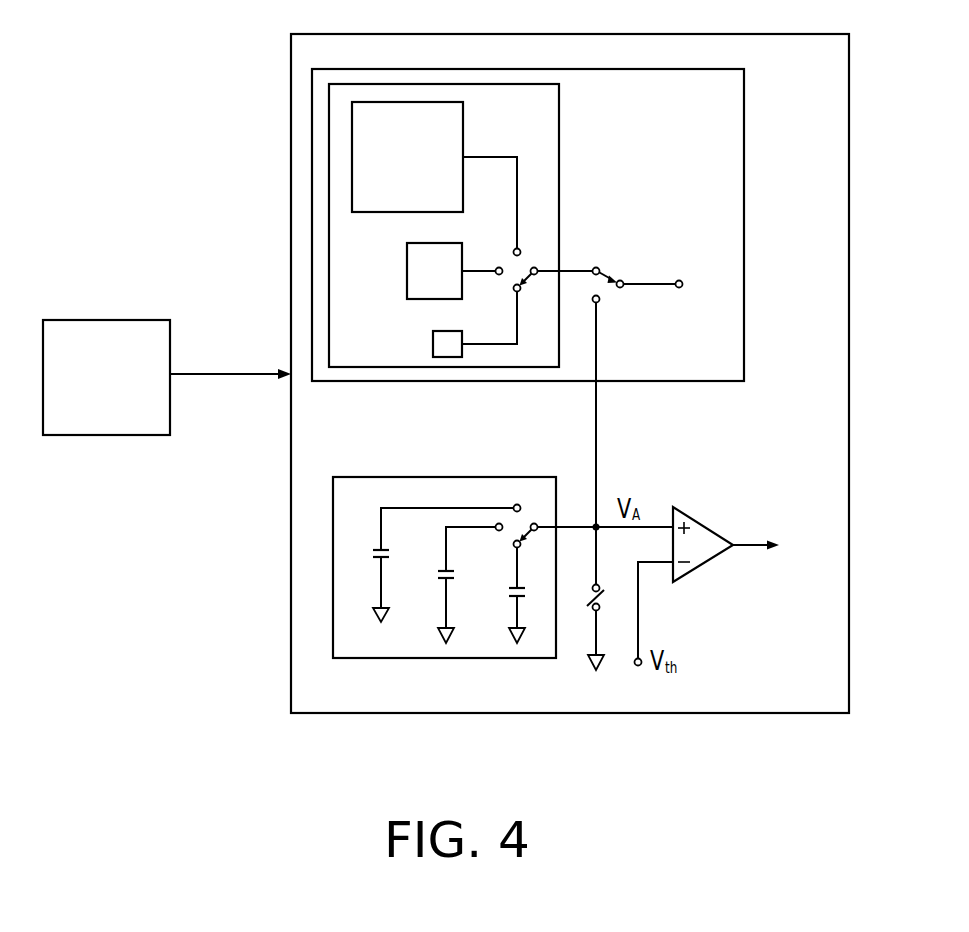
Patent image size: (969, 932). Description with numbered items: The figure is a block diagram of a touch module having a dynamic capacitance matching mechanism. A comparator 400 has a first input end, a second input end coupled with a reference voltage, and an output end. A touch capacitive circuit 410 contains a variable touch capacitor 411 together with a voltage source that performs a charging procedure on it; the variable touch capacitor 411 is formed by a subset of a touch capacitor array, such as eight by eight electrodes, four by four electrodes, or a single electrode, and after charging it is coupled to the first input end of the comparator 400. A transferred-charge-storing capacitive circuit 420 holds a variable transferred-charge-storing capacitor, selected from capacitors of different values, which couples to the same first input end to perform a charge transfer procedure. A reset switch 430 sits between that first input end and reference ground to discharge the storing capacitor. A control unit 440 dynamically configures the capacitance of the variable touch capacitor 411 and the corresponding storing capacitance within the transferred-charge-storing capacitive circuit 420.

The comparator 400 is at (712, 522).
The touch capacitive circuit 410 is at (744, 170).
The variable touch capacitor 411 is at (559, 145).
The transferred-charge-storing capacitive circuit 420 is at (452, 477).
The reset switch 430 is at (605, 593).
The control unit 440 is at (116, 320).